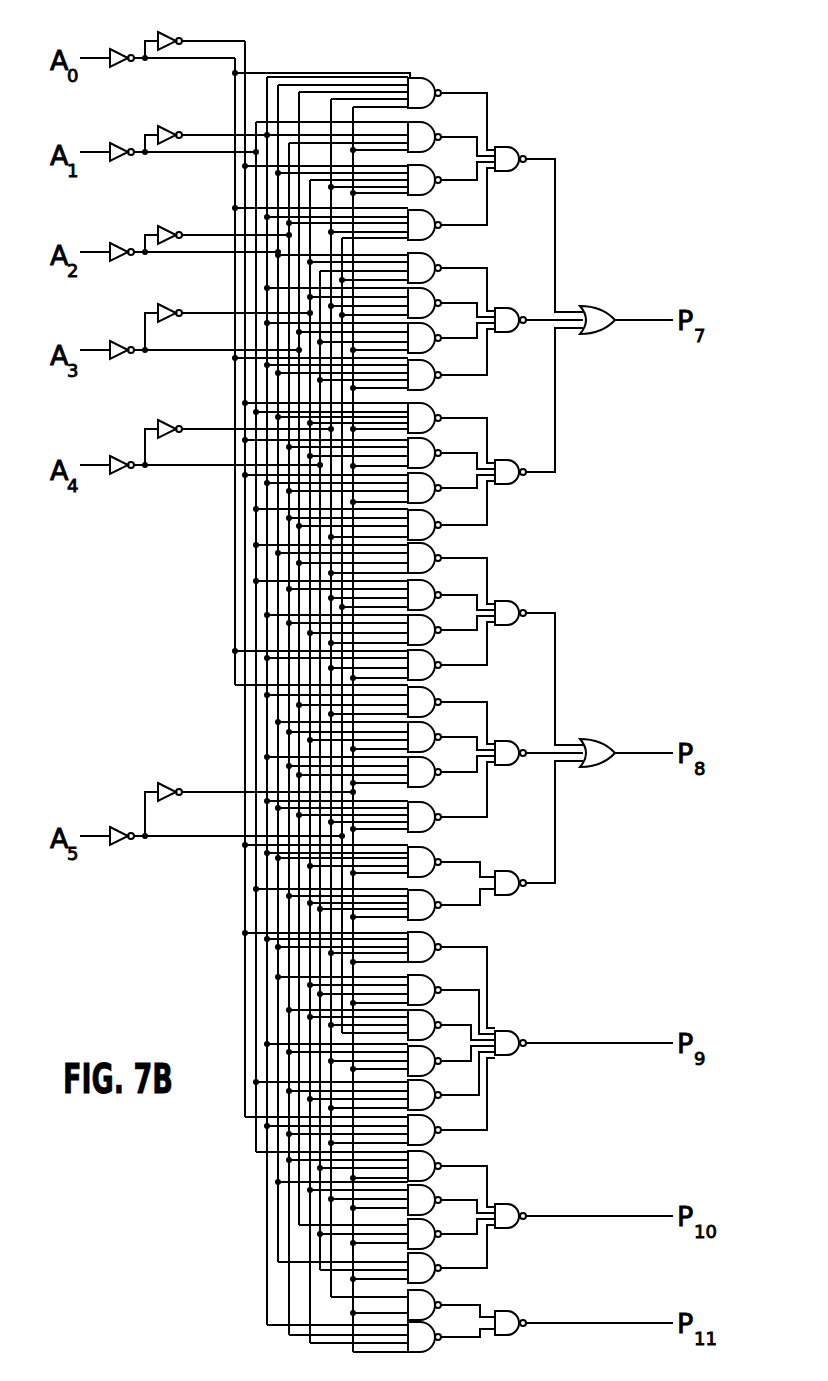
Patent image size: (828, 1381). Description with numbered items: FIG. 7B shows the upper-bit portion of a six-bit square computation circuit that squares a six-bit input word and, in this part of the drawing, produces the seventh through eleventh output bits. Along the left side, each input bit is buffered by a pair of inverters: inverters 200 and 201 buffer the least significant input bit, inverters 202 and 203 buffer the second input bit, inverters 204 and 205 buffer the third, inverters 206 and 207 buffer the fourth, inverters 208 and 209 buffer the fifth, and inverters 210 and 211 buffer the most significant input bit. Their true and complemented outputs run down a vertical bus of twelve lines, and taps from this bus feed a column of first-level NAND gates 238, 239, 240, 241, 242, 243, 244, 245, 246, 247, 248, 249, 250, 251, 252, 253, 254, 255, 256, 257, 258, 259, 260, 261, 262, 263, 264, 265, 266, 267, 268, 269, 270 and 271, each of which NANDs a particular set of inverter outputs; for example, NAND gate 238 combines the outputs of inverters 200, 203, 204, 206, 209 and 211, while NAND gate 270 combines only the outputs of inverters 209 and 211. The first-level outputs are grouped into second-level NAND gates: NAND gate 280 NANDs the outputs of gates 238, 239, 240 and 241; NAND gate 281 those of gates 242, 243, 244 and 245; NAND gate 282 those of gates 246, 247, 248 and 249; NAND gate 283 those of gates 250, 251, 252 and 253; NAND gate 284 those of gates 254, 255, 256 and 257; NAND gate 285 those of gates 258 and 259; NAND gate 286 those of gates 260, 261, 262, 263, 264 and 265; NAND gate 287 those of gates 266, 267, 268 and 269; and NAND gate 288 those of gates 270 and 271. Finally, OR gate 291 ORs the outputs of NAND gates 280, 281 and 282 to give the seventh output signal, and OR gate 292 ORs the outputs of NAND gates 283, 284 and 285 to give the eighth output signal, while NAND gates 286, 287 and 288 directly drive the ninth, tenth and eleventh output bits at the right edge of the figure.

The inverter 200 is at (120, 66).
The inverter 201 is at (167, 32).
The inverter 202 is at (120, 160).
The inverter 203 is at (160, 128).
The inverter 204 is at (120, 260).
The inverter 205 is at (168, 226).
The inverter 206 is at (120, 358).
The inverter 207 is at (168, 304).
The inverter 208 is at (120, 473).
The inverter 209 is at (168, 420).
The inverter 210 is at (120, 844).
The inverter 211 is at (170, 783).
The NAND gate 238 is at (425, 110).
The NAND gate 239 is at (425, 153).
The NAND gate 240 is at (425, 196).
The NAND gate 241 is at (425, 237).
The NAND gate 242 is at (425, 280).
The NAND gate 243 is at (425, 315).
The NAND gate 244 is at (425, 350).
The NAND gate 245 is at (425, 387).
The NAND gate 246 is at (425, 430).
The NAND gate 247 is at (425, 465).
The NAND gate 248 is at (425, 500).
The NAND gate 249 is at (425, 537).
The NAND gate 250 is at (425, 570).
The NAND gate 251 is at (425, 607).
The NAND gate 252 is at (425, 642).
The NAND gate 253 is at (425, 677).
The NAND gate 254 is at (425, 714).
The NAND gate 255 is at (425, 749).
The NAND gate 256 is at (425, 784).
The NAND gate 257 is at (425, 829).
The NAND gate 258 is at (425, 874).
The NAND gate 259 is at (425, 917).
The NAND gate 260 is at (425, 959).
The NAND gate 261 is at (425, 1002).
The NAND gate 262 is at (470, 1025).
The NAND gate 263 is at (425, 1073).
The NAND gate 264 is at (425, 1107).
The NAND gate 265 is at (425, 1142).
The NAND gate 266 is at (425, 1178).
The NAND gate 267 is at (425, 1212).
The NAND gate 268 is at (425, 1246).
The NAND gate 269 is at (425, 1280).
The NAND gate 270 is at (425, 1317).
The NAND gate 271 is at (425, 1349).
The NAND gate 280 is at (503, 146).
The NAND gate 281 is at (500, 307).
The NAND gate 282 is at (500, 459).
The NAND gate 283 is at (500, 600).
The NAND gate 284 is at (498, 740).
The NAND gate 285 is at (498, 870).
The NAND gate 286 is at (500, 1030).
The NAND gate 287 is at (500, 1203).
The NAND gate 288 is at (515, 1336).
The OR gate 291 is at (592, 306).
The OR gate 292 is at (590, 740).